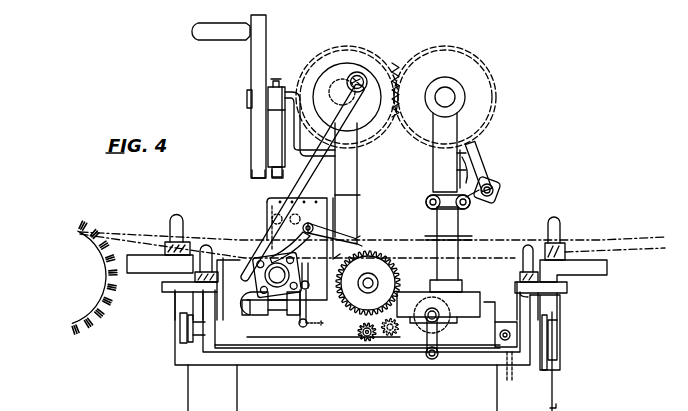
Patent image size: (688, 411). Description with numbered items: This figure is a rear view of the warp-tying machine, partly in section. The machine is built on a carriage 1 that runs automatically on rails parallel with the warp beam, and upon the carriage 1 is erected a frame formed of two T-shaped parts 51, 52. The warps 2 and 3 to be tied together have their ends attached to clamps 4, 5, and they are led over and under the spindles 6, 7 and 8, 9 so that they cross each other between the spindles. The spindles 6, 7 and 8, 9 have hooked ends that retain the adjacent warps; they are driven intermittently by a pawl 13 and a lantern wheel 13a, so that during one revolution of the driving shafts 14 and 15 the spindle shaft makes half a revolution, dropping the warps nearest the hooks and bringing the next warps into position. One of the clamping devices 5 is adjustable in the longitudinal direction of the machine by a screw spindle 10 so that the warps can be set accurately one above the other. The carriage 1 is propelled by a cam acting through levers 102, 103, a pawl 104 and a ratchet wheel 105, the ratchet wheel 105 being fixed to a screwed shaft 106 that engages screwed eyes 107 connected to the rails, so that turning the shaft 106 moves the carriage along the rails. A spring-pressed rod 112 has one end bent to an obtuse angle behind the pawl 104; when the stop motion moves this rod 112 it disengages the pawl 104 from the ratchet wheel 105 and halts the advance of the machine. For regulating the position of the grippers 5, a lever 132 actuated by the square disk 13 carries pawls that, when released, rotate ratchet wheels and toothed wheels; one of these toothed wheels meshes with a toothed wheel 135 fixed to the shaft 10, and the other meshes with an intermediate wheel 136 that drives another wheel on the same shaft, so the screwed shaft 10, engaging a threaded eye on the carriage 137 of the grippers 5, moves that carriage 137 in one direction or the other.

The carriage 1 is at (480, 297).
The warp 2 is at (228, 239).
The warp 3 is at (240, 258).
The clamp 4 is at (165, 249).
The clamp 5 is at (195, 281).
The spindle 6 is at (326, 238).
The spindle 7 is at (358, 241).
The spindle 8 is at (308, 262).
The spindle 9 is at (335, 260).
The screw spindle 10 is at (366, 341).
The pawl 13 is at (372, 88).
The lantern wheel 13a is at (362, 244).
The driving shaft 14 is at (355, 75).
The driving shaft 15 is at (447, 96).
The T-shaped frame part 51 is at (357, 180).
The T-shaped frame part 52 is at (437, 171).
The lever 102 is at (494, 197).
The lever 103 is at (426, 205).
The pawl 104 is at (459, 271).
The ratchet wheel 105 is at (450, 321).
The screwed shaft 106 is at (427, 348).
The screwed eye 107 is at (447, 340).
The spring-pressed rod 112 is at (432, 237).
The lever 132 is at (306, 312).
The toothed wheel 135 is at (358, 333).
The intermediate wheel 136 is at (389, 337).
The carriage of the grippers 137 is at (308, 355).